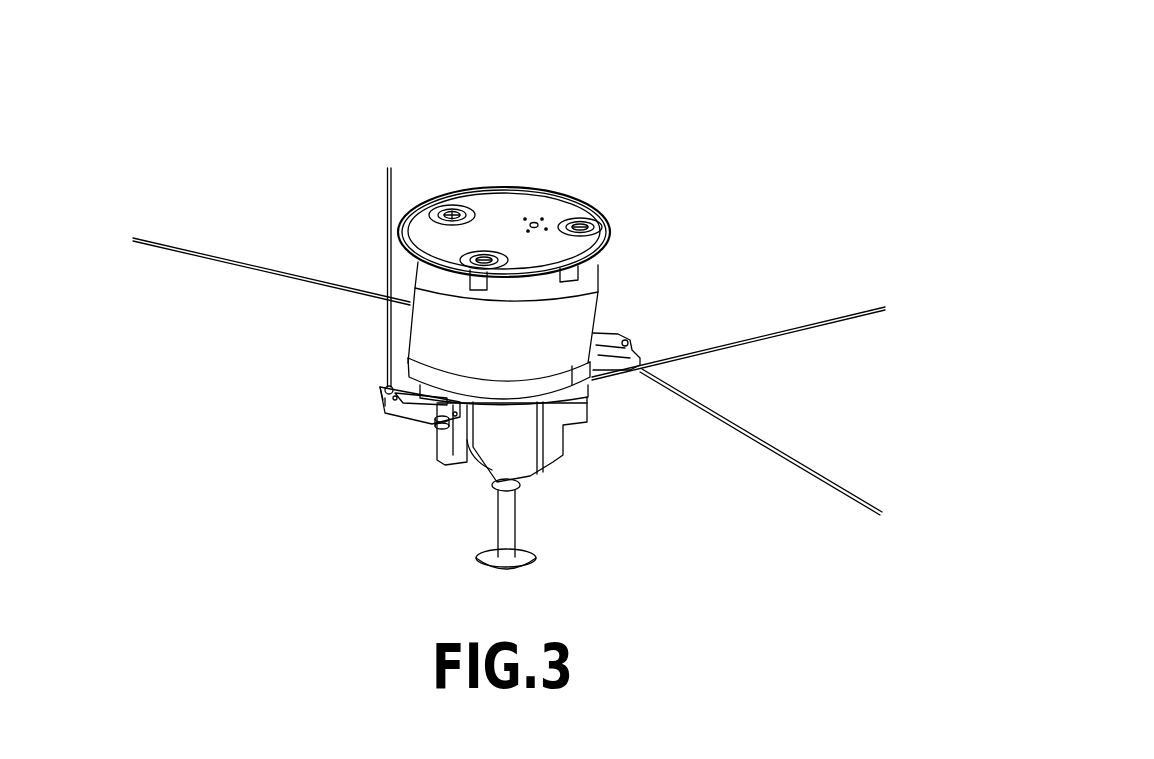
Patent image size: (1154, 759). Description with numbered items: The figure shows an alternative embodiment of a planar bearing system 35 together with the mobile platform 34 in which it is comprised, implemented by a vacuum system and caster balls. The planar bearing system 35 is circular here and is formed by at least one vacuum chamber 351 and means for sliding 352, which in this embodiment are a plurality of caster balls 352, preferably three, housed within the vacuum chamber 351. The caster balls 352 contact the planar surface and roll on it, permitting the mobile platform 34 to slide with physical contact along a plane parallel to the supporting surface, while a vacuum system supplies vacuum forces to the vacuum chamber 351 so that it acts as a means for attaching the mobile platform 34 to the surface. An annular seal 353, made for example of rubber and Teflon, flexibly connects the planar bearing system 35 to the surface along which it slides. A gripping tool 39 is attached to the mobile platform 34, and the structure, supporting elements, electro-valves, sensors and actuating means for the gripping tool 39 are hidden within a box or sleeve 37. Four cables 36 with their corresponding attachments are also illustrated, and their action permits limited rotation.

The mobile platform 34 is at (616, 143).
The planar bearing system 35 is at (529, 175).
The vacuum chamber 351 is at (492, 206).
The caster balls 352 is at (610, 225).
The seal 353 is at (407, 230).
The cables 36 is at (387, 322).
The sleeve 37 is at (577, 310).
The gripping tool 39 is at (533, 552).